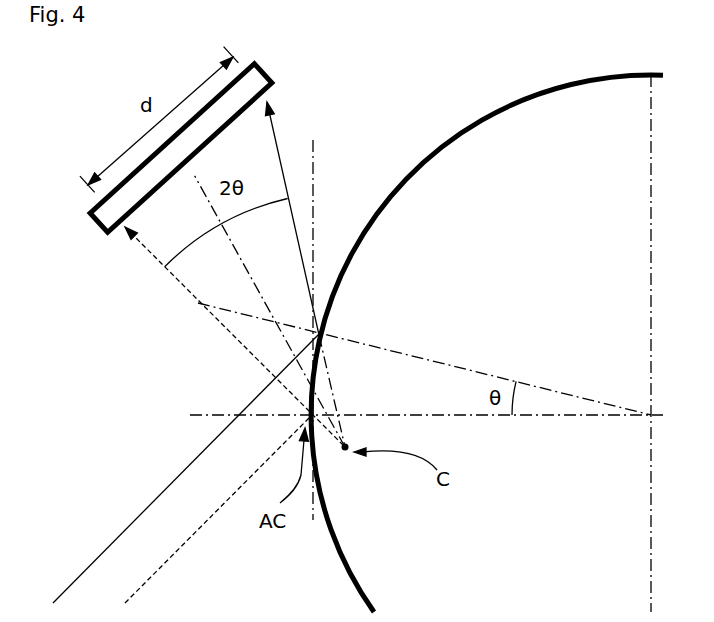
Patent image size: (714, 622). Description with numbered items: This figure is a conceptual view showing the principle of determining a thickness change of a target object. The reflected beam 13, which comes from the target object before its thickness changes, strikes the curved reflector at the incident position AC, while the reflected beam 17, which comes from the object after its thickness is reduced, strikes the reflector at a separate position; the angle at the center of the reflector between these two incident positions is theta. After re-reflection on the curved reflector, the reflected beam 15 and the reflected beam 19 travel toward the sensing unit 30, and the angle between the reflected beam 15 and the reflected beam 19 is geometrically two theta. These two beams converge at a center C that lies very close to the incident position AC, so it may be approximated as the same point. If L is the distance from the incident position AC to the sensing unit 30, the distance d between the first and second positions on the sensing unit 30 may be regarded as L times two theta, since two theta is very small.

The sensing unit 30 is at (261, 79).
The reflected beam 19 is at (297, 231).
The reflected beam 15 is at (186, 289).
The reflected beam 17 is at (153, 503).
The reflected beam 13 is at (177, 548).